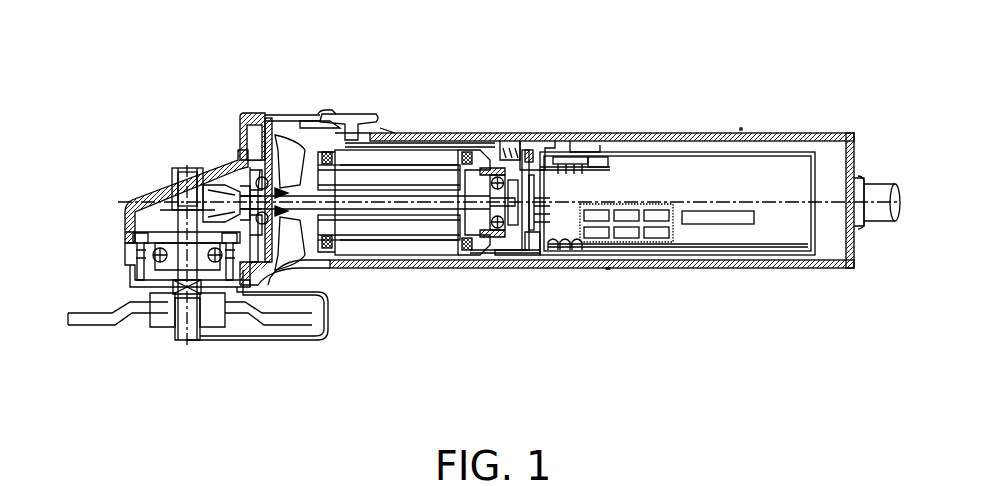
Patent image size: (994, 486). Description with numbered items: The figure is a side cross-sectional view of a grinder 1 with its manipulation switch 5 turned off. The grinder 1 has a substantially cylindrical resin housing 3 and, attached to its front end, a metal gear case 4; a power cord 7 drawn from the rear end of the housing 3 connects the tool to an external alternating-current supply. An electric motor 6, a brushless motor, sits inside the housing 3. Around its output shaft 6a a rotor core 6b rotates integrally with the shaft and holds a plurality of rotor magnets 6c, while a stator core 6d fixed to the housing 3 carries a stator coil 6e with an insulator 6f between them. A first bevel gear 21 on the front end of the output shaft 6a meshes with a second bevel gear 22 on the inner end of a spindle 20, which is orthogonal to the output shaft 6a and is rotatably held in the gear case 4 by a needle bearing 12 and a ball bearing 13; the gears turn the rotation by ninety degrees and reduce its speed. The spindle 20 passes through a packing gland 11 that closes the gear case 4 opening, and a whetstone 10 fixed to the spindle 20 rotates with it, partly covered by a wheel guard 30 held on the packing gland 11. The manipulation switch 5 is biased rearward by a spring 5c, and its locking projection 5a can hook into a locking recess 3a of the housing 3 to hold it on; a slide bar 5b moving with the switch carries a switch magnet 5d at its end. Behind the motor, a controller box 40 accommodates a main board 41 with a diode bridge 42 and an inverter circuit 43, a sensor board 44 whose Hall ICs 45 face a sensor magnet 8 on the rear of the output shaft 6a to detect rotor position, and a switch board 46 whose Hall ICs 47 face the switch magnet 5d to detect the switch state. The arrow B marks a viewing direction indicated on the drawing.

The grinder 1 is at (741, 128).
The housing 3 is at (672, 133).
The locking recess 3a is at (305, 117).
The gear case 4 is at (175, 193).
The manipulation switch 5 is at (353, 118).
The locking projection 5a is at (325, 113).
The slide bar 5b is at (398, 133).
The spring 5c is at (510, 148).
The switch magnet 5d is at (583, 145).
The electric motor 6 is at (435, 262).
The output shaft 6a is at (352, 270).
The rotor core 6b is at (382, 265).
The rotor magnets 6c is at (422, 262).
The stator core 6d is at (470, 265).
The stator coil 6e is at (515, 262).
The insulator 6f is at (490, 262).
The power cord 7 is at (882, 190).
The sensor magnet 8 is at (537, 148).
The whetstone 10 is at (92, 325).
The packing gland 11 is at (125, 243).
The needle bearing 12 is at (185, 168).
The ball bearing 13 is at (135, 268).
The spindle 20 is at (190, 165).
The first bevel gear 21 is at (243, 112).
The second bevel gear 22 is at (135, 200).
The wheel guard 30 is at (245, 340).
The controller box 40 is at (645, 152).
The main board 41 is at (668, 248).
The diode bridge 42 is at (700, 222).
The inverter circuit 43 is at (620, 245).
The sensor board 44 is at (570, 262).
The Hall ICs 45 is at (520, 250).
The switch board 46 is at (592, 165).
The Hall ICs 47 is at (565, 157).
The direction B is at (612, 278).